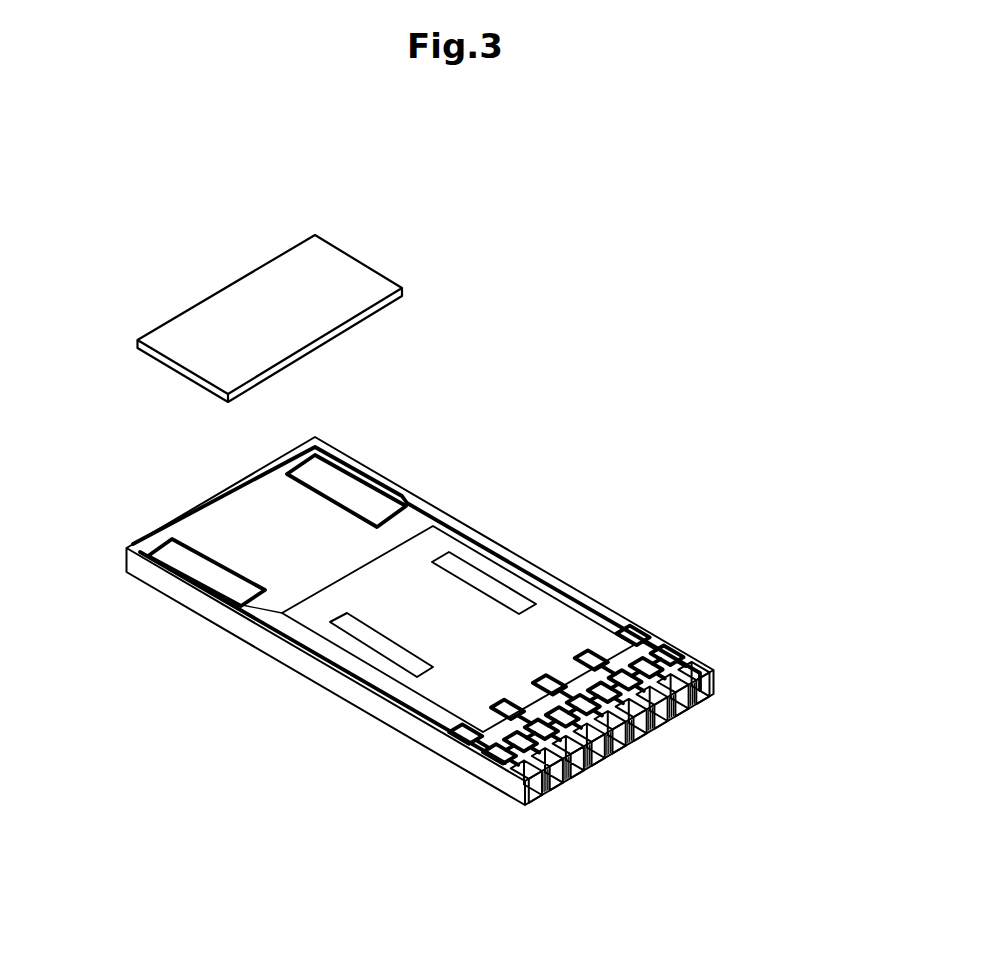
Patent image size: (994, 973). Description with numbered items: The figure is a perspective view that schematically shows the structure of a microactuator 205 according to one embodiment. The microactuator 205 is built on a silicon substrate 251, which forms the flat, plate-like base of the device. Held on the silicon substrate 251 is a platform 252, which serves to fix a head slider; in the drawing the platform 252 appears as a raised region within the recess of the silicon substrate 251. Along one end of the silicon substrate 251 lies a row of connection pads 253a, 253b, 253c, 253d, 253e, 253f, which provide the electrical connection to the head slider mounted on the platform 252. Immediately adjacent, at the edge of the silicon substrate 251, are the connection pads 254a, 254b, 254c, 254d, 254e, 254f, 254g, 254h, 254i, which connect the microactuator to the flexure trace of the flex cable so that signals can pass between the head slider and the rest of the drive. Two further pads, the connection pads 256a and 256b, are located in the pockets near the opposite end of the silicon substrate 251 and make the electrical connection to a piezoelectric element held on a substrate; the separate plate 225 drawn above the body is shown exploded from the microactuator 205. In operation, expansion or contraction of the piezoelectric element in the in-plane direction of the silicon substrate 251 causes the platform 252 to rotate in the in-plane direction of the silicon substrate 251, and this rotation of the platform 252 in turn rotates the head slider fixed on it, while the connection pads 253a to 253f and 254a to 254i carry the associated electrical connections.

The microactuator 205 is at (514, 324).
The lid plate 225 is at (340, 262).
The silicon substrate 251 is at (306, 664).
The platform 252 is at (492, 565).
The connection pad 253a is at (492, 752).
The connection pad 253b is at (555, 712).
The connection pad 253c is at (600, 692).
The connection pad 253d is at (622, 678).
The connection pad 253e is at (644, 666).
The connection pad 253f is at (666, 654).
The connection pad 254a is at (536, 790).
The connection pad 254b is at (560, 781).
The connection pad 254c is at (585, 772).
The connection pad 254d is at (604, 758).
The connection pad 254e is at (627, 742).
The connection pad 254f is at (648, 730).
The connection pad 254g is at (669, 715).
The connection pad 254h is at (690, 690).
The terminal 254i is at (712, 676).
The connection pad 256a is at (362, 493).
The connection pad 256b is at (187, 567).